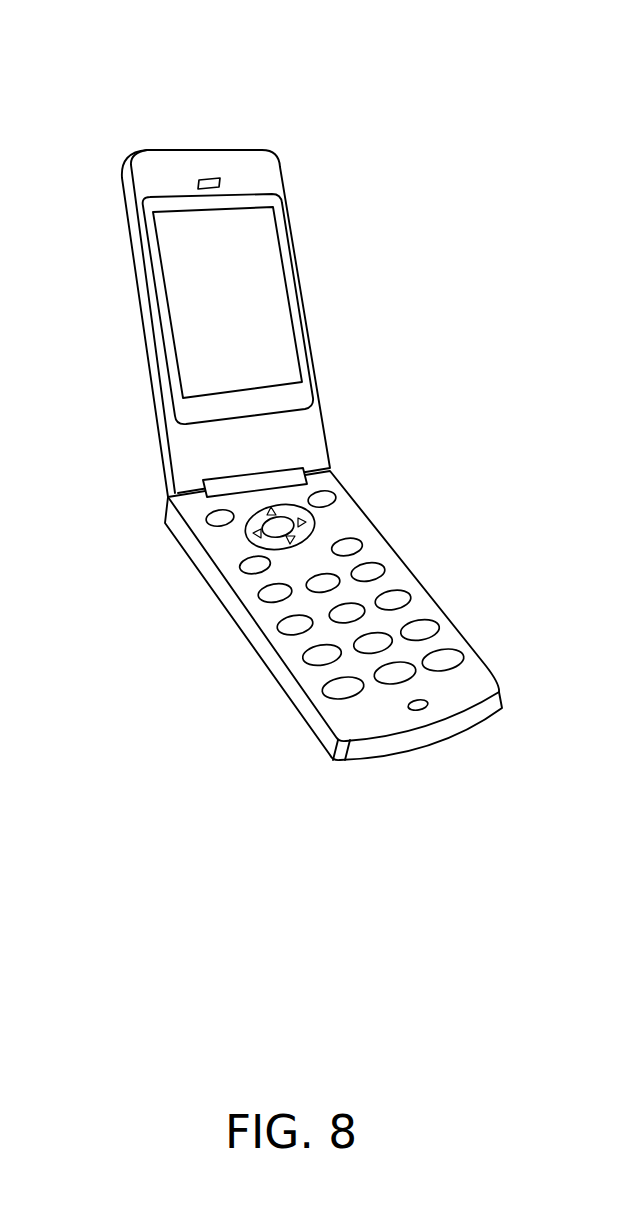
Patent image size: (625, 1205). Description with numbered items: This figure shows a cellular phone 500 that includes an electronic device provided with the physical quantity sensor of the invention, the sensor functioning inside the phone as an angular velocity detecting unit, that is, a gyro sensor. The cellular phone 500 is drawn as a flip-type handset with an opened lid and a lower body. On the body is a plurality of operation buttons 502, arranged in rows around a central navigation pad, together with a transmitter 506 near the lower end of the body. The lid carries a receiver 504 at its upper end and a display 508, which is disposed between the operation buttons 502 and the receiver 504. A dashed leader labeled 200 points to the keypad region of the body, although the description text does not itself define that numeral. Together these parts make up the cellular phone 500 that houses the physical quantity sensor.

The cellular phone 500 is at (333, 111).
The receiver 504 is at (211, 175).
The display 508 is at (193, 287).
The keypad 200 is at (342, 523).
The operation buttons 502 is at (368, 572).
The transmitter 506 is at (422, 706).